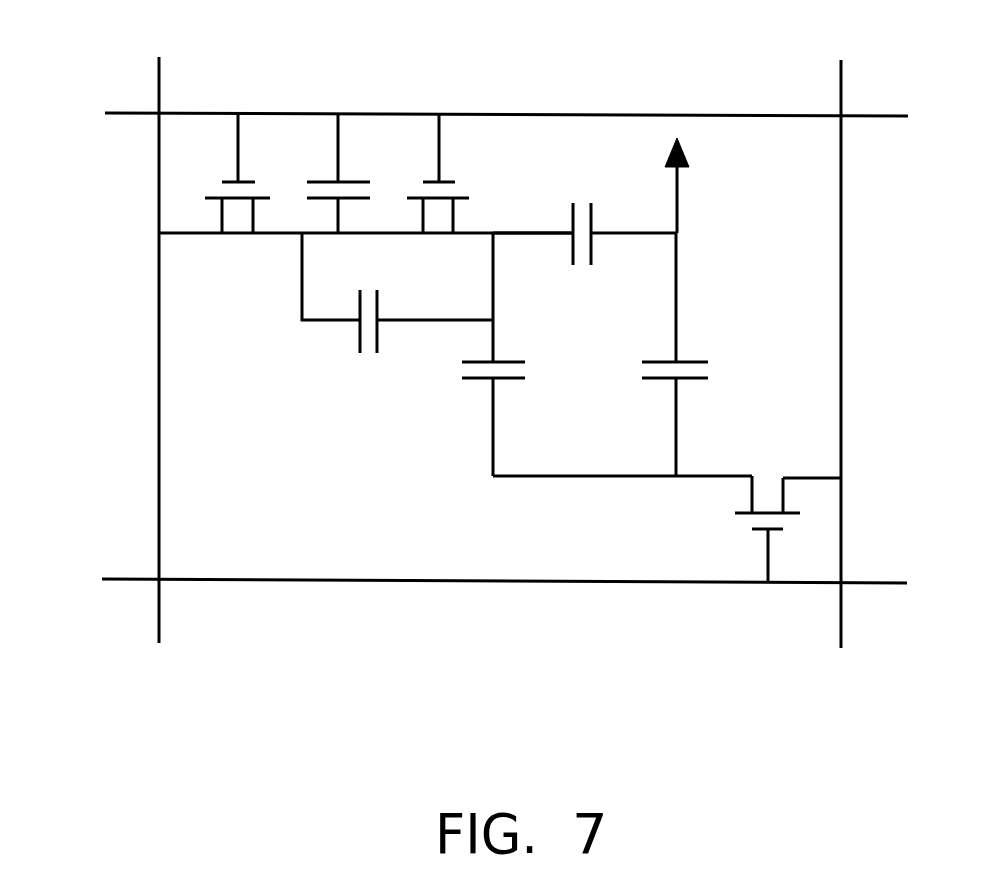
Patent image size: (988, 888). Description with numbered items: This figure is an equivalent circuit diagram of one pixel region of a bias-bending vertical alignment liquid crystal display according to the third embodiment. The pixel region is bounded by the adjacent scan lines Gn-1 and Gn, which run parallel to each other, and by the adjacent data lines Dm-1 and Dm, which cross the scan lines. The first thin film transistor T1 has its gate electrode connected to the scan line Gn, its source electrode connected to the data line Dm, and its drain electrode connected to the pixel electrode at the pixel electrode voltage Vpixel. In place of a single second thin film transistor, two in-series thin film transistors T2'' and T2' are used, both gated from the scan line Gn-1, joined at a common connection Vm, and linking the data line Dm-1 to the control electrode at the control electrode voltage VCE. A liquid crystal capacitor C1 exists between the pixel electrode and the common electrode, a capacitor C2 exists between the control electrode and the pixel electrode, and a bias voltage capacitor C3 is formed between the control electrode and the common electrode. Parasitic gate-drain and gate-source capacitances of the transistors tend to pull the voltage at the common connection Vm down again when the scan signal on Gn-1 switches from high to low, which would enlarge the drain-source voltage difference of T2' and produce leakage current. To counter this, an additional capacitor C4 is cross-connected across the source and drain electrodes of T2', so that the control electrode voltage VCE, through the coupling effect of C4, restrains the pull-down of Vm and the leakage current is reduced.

The scan line Gn-1 is at (476, 110).
The scan line Gn is at (476, 574).
The data line Dm-1 is at (173, 326).
The data line Dm is at (846, 332).
The thin film transistor T2'' is at (237, 198).
The thin film transistor T2' is at (438, 198).
The control electrode voltage VCE is at (547, 233).
The bias voltage capacitor C3 is at (585, 211).
The common connection Vm is at (302, 237).
The additional capacitor C4 is at (424, 346).
The capacitor C2 is at (476, 354).
The liquid crystal capacitor C1 is at (697, 354).
The pixel electrode voltage Vpixel is at (567, 476).
The first thin film transistor T1 is at (788, 508).